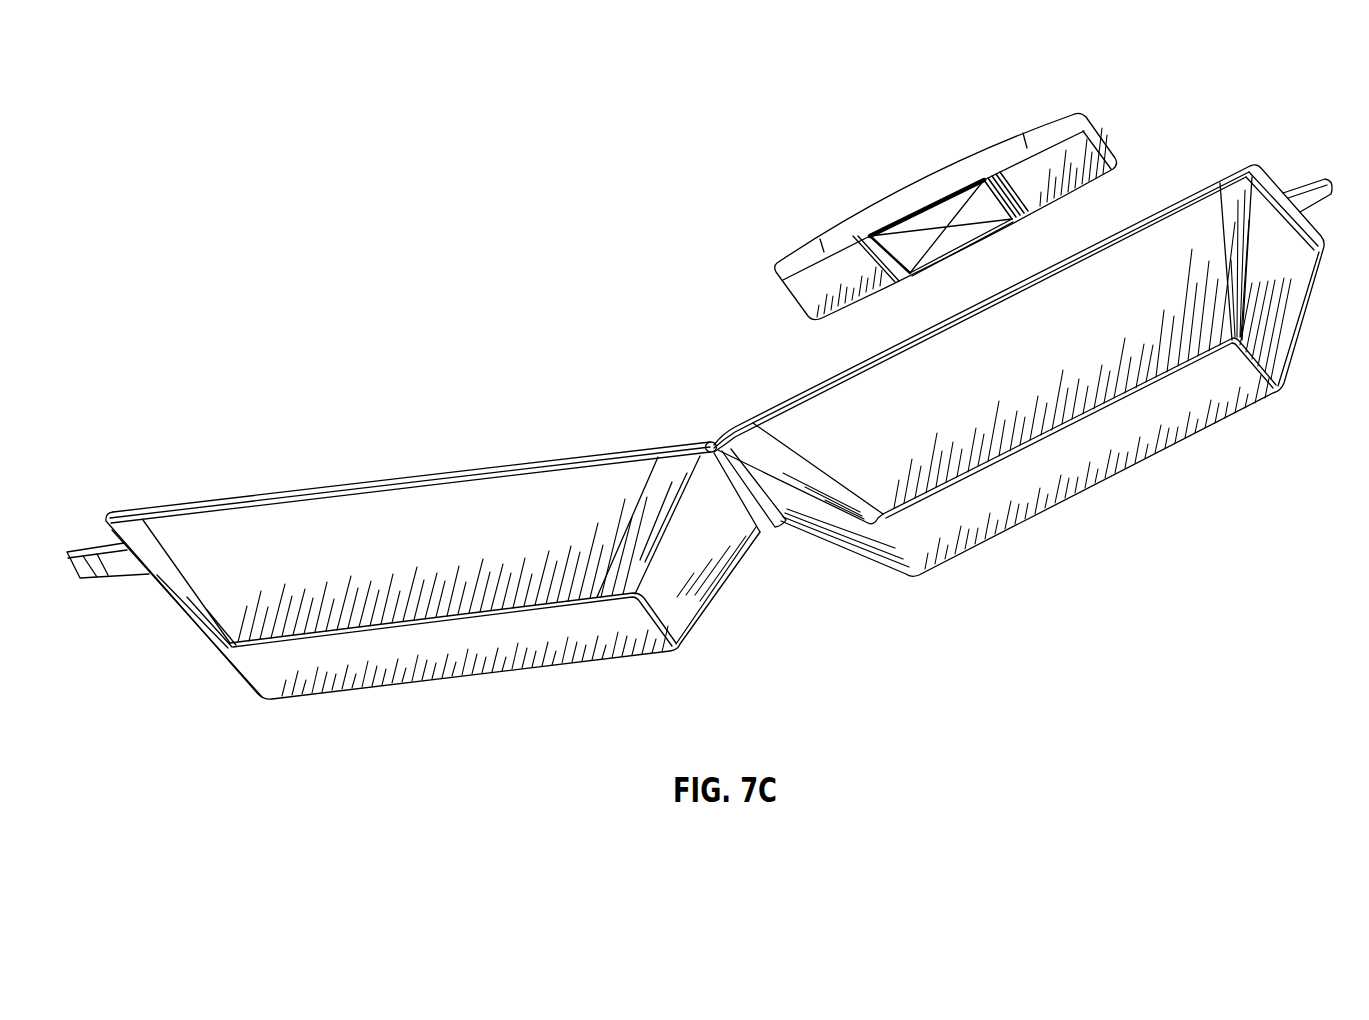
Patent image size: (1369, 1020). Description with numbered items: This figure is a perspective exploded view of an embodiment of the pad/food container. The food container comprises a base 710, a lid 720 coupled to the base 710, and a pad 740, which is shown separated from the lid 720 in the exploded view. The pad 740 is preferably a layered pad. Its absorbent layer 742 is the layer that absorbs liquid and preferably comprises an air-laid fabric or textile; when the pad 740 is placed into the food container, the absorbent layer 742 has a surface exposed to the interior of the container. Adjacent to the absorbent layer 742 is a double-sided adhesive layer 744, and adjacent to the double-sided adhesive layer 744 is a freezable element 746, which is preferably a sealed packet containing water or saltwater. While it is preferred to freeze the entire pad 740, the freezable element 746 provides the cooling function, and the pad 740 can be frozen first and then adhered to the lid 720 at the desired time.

The base 710 is at (443, 517).
The lid 720 is at (1035, 493).
The pad 740 is at (949, 192).
The absorbent layer 742 is at (811, 250).
The double-sided adhesive layer 744 is at (1101, 176).
The freezable element 746 is at (947, 212).